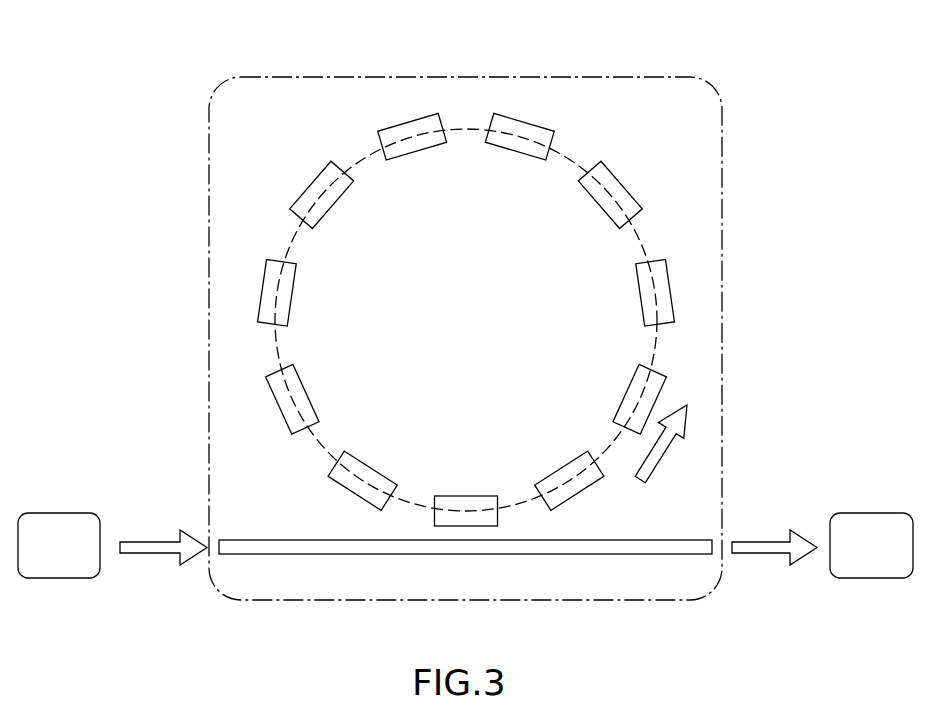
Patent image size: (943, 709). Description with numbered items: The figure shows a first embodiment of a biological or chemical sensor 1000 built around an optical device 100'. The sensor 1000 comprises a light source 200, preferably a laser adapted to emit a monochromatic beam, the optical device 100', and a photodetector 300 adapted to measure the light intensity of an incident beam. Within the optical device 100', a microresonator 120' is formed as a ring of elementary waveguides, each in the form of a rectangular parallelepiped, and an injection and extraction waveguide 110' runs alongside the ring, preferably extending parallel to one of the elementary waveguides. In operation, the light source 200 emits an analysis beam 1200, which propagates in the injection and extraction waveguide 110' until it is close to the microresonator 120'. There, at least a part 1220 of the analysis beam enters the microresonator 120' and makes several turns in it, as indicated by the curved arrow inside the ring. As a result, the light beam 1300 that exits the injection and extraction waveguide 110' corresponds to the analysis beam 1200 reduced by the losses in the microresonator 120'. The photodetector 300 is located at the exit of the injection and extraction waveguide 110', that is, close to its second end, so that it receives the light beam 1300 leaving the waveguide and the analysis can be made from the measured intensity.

The biological or chemical sensor 1000 is at (178, 232).
The optical device 100' is at (525, 337).
The injection and extraction waveguide 110' is at (465, 590).
The microresonator 120' is at (488, 280).
The part of the analysis beam 1220 is at (660, 458).
The light source 200 is at (55, 530).
The photodetector 300 is at (868, 530).
The analysis beam 1200 is at (160, 547).
The light beam 1300 is at (764, 547).